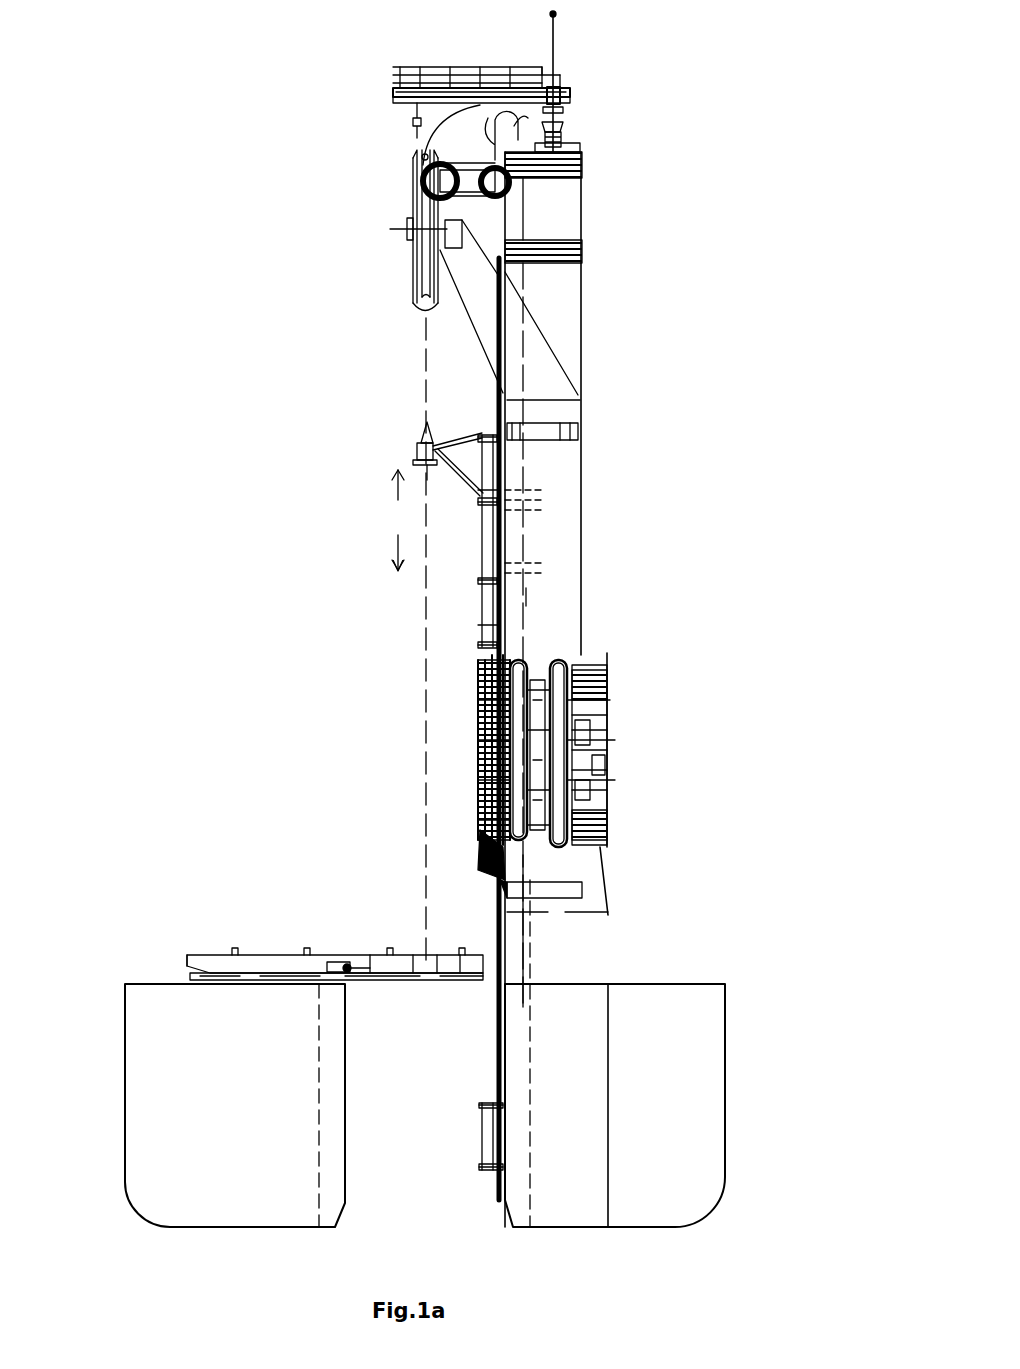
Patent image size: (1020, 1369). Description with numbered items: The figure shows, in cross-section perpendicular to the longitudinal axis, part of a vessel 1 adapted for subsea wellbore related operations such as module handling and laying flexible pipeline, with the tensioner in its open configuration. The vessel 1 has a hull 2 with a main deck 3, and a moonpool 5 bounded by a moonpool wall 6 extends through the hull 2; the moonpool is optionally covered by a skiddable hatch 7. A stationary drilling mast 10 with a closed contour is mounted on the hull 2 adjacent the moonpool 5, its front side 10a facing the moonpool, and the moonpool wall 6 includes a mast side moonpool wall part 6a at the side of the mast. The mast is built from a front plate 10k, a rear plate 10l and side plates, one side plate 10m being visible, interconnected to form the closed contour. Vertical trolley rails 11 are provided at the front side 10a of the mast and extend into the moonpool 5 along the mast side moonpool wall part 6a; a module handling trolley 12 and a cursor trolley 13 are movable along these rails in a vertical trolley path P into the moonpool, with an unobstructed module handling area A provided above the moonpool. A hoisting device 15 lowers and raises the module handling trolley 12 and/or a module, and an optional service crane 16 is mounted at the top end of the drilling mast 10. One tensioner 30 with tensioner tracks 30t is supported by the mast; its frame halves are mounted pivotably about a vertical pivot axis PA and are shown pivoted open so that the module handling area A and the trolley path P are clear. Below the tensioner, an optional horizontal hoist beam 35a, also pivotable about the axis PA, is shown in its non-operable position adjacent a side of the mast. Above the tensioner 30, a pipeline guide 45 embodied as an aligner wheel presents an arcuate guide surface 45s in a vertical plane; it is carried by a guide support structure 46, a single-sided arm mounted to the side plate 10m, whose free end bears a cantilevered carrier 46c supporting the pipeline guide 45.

The vessel 1 is at (437, 1053).
The hull 2 is at (615, 1053).
The main deck 3 is at (700, 985).
The moonpool 5 is at (416, 1065).
The moonpool wall 6 is at (345, 1126).
The mast side moonpool wall part 6a is at (503, 1001).
The skiddable hatch 7 is at (425, 946).
The drilling mast 10 is at (567, 689).
The front side of the drilling mast 10a is at (507, 465).
The front plate 10k is at (514, 546).
The rear plate 10l is at (582, 574).
The side plate 10m is at (552, 597).
The vertical trolley rails 11 is at (507, 332).
The module handling trolley 12 is at (413, 462).
The cursor trolley 13 is at (483, 624).
The hoisting device 15 is at (465, 180).
The service crane 16 is at (405, 80).
The tensioner 30 is at (605, 809).
The tensioner tracks 30t is at (555, 658).
The horizontal hoist beam 35a is at (563, 890).
The pipeline guide 45 is at (396, 230).
The arcuate guide surface 45s is at (425, 163).
The guide support structure 46 is at (468, 252).
The cantilevered carrier 46c is at (398, 237).
The module handling area A is at (456, 890).
The vertical trolley path P is at (397, 520).
The vertical pivot axis PA is at (478, 731).